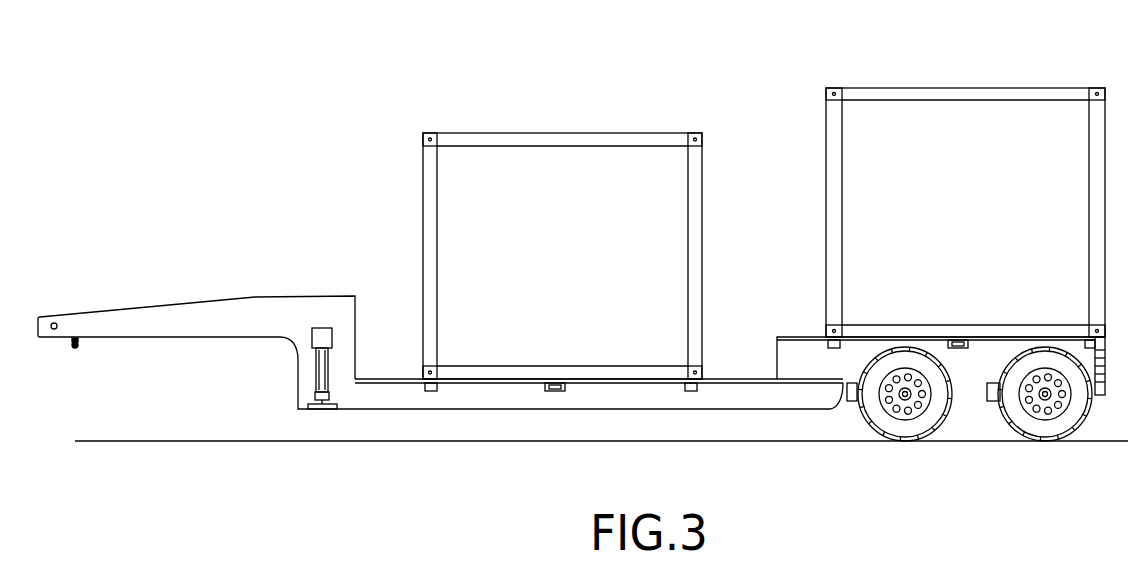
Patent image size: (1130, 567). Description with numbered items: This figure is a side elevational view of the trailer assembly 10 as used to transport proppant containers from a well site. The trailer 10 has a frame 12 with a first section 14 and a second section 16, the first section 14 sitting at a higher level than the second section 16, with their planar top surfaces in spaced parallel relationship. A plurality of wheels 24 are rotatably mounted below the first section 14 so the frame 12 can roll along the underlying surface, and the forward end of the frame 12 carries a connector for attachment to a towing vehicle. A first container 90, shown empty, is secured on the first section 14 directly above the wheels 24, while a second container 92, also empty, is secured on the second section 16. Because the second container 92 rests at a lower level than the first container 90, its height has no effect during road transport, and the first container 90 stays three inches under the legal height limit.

The trailer assembly 10 is at (271, 268).
The frame 12 is at (331, 305).
The first section 14 is at (802, 353).
The second section 16 is at (720, 405).
The wheels 24 is at (913, 443).
The first container 90 is at (1005, 118).
The second container 92 is at (665, 195).